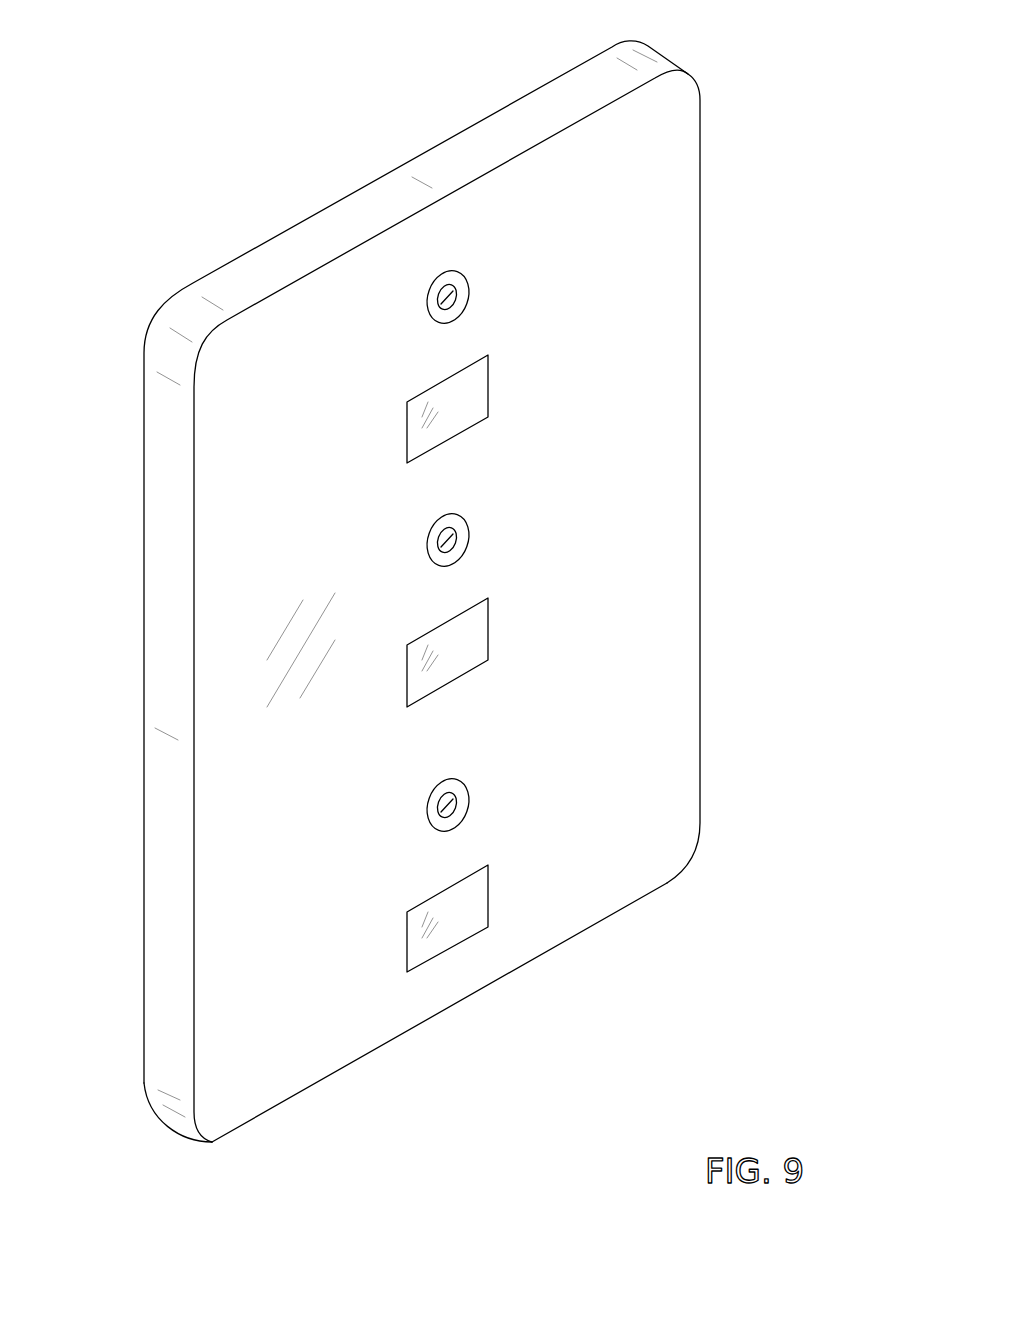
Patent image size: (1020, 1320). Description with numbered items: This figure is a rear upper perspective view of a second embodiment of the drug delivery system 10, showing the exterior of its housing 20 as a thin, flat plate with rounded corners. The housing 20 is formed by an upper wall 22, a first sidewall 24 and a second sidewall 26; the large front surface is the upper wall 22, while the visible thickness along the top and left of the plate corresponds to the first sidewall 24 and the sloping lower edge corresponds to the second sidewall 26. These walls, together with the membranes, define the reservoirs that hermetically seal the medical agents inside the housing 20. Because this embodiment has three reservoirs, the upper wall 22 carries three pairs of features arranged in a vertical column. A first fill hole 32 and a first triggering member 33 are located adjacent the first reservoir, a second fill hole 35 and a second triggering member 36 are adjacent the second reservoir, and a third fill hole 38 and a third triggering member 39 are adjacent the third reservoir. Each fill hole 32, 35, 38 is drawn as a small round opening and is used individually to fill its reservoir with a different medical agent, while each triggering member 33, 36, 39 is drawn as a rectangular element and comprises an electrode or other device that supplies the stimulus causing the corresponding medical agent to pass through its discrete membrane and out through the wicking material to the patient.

The drug delivery system 10 is at (172, 145).
The housing 20 is at (703, 210).
The upper wall 22 is at (612, 545).
The first sidewall 24 is at (300, 243).
The second sidewall 26 is at (592, 930).
The first fill hole 32 is at (457, 301).
The first triggering member 33 is at (477, 395).
The second fill hole 35 is at (463, 545).
The second triggering member 36 is at (473, 640).
The third fill hole 38 is at (460, 805).
The third triggering member 39 is at (453, 930).